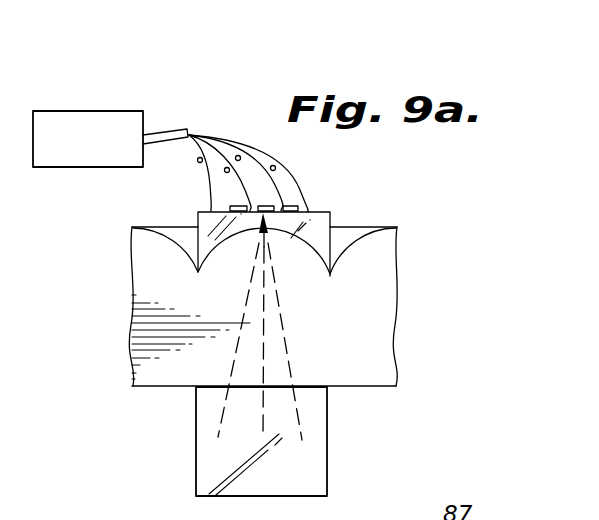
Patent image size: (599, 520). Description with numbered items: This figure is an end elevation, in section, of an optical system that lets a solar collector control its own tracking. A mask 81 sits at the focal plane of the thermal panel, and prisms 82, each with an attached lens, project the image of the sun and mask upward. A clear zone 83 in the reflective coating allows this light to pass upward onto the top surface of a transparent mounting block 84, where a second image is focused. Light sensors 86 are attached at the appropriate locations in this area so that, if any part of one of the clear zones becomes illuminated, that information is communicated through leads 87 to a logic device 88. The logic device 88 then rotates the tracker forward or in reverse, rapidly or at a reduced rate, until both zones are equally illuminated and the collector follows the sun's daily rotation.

The mask 81 is at (398, 277).
The prism 82 is at (180, 448).
The clear zone in the reflective coating 83 is at (274, 388).
The transparent mounting block 84 is at (329, 223).
The light sensor 86 is at (238, 208).
The lead wires 87 is at (216, 152).
The logic device 88 is at (81, 111).